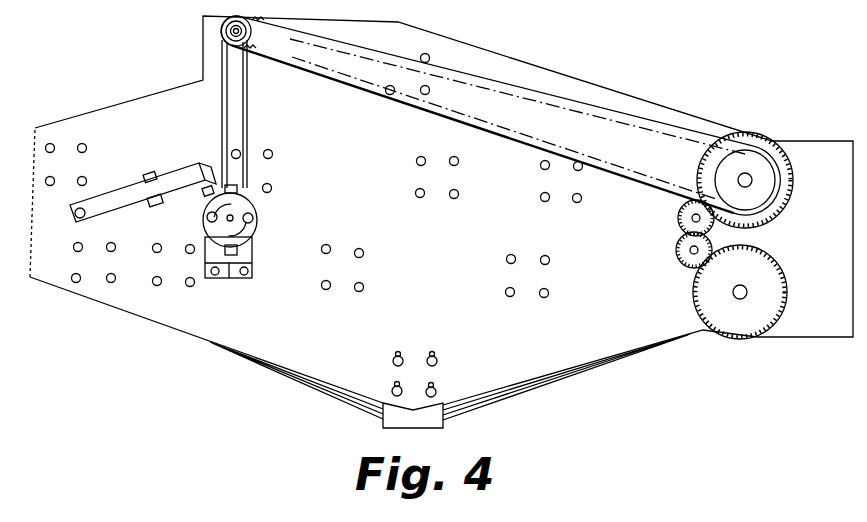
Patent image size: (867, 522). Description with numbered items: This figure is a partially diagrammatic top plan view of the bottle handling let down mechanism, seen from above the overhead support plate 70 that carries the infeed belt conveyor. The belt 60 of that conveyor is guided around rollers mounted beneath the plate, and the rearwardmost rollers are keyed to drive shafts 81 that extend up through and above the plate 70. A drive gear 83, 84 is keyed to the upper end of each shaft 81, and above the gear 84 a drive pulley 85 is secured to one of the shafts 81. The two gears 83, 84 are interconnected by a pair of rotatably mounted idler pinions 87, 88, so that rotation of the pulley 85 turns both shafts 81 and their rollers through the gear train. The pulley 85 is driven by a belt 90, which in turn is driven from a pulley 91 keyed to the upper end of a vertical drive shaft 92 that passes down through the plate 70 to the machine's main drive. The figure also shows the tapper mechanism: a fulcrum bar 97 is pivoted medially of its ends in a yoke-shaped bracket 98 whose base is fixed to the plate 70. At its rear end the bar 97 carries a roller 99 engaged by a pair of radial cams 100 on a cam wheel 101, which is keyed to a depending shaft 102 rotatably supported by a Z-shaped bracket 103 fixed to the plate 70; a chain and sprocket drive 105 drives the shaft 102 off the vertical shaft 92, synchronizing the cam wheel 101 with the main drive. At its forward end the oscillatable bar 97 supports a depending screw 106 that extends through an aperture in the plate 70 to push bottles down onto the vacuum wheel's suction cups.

The belt 60 is at (488, 404).
The overhead support plate 70 is at (441, 210).
The drive shaft 81 is at (753, 180).
The drive gear 83 is at (790, 308).
The drive gear 84 is at (798, 172).
The drive pulley 85 is at (758, 162).
The idler pinion 87 is at (680, 216).
The idler pinion 88 is at (684, 264).
The belt 90 is at (508, 140).
The pulley 91 is at (262, 26).
The drive shaft 92 is at (221, 31).
The fulcrum bar 97 is at (124, 186).
The yoke-shaped bracket 98 is at (152, 178).
The roller 99 is at (204, 219).
The cam 100 is at (240, 189).
The cam wheel 101 is at (256, 216).
The drive shaft 102 is at (248, 234).
The Z-shaped bracket 103 is at (230, 279).
The chain and sprocket drive 105 is at (250, 110).
The screw 106 is at (73, 214).